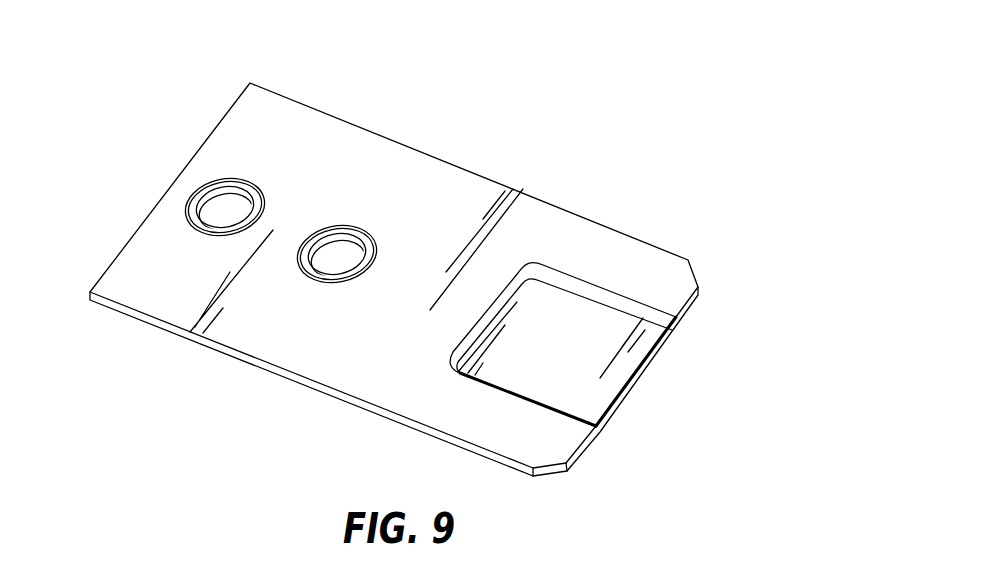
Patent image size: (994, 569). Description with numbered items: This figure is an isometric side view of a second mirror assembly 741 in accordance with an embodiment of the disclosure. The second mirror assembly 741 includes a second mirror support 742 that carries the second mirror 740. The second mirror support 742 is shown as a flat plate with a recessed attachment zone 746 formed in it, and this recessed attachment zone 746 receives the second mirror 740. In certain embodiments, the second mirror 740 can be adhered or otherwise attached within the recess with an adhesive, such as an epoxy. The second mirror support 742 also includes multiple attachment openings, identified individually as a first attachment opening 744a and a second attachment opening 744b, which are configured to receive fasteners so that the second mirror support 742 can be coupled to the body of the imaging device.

The second mirror assembly 741 is at (656, 93).
The second mirror support 742 is at (427, 193).
The first attachment opening 744a is at (322, 253).
The second attachment opening 744b is at (203, 216).
The recessed attachment zone 746 is at (642, 315).
The second mirror 740 is at (570, 362).